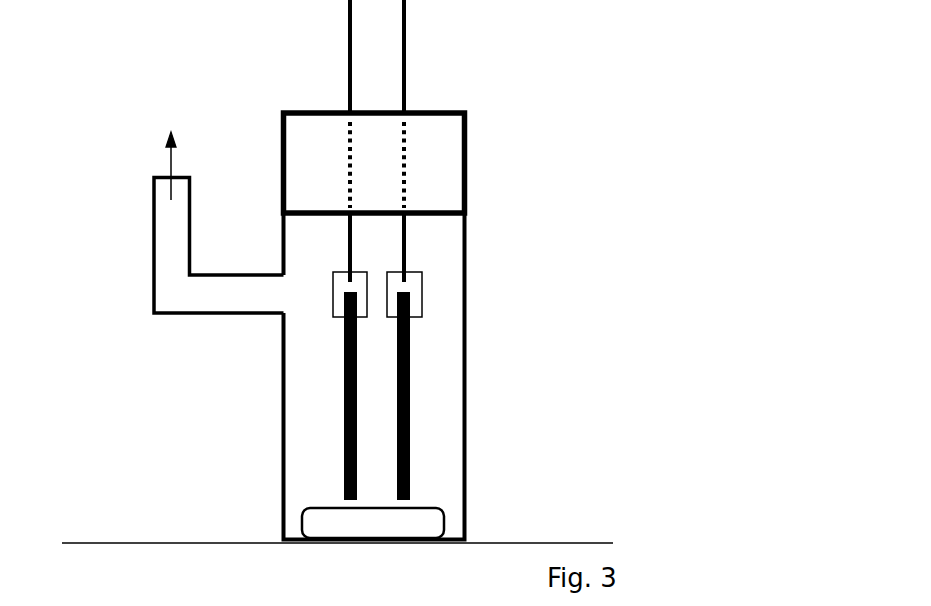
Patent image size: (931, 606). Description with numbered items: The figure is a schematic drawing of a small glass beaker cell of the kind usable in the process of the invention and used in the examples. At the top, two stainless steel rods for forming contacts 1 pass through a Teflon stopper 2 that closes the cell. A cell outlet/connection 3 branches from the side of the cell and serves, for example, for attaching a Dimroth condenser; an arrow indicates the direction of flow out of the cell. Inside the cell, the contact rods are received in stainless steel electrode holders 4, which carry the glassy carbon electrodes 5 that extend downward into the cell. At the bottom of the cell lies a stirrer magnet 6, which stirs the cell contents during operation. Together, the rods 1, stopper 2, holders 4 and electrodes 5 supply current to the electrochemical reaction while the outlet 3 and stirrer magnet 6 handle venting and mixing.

The stainless steel rod for forming contacts 1 is at (404, 29).
The Teflon stopper 2 is at (467, 162).
The cell outlet/connection 3 is at (153, 226).
The electrode holders 4 is at (422, 295).
The glassy carbon electrodes 5 is at (410, 395).
The stirrer magnet 6 is at (444, 524).